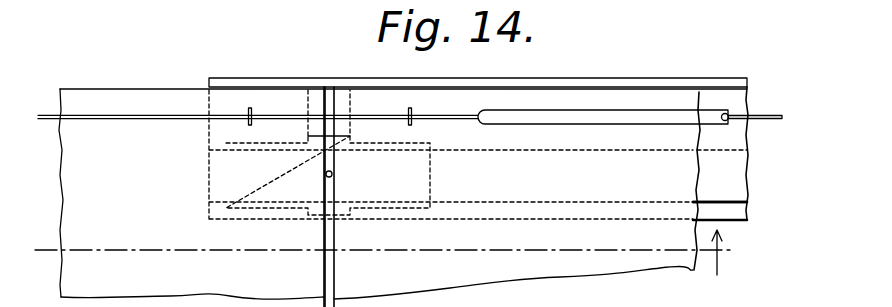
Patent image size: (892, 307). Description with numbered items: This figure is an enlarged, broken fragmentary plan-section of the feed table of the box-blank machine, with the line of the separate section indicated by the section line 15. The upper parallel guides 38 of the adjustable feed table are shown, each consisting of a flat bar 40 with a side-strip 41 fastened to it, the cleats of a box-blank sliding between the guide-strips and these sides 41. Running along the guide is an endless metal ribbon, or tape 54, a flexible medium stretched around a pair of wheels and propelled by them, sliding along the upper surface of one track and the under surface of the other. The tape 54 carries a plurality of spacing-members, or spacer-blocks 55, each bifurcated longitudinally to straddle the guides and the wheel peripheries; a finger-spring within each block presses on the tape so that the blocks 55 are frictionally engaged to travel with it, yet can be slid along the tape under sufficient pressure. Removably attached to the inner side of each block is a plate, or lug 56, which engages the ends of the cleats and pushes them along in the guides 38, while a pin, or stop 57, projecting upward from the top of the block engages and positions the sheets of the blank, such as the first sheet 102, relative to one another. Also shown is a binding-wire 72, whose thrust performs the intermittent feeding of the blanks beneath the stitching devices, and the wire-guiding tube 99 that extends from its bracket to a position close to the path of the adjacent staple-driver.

The section line 15 is at (741, 252).
The upper parallel guides 38 is at (744, 178).
The flat bar 40 is at (738, 212).
The side-strip 41 is at (308, 80).
The endless metal ribbon, or tape 54 is at (730, 182).
The spacing-members, or spacer-blocks 55 is at (430, 170).
The plate, or lug 56 is at (352, 127).
The pin, or stop 57 is at (332, 174).
The binding-wires 72 is at (148, 118).
The wire-guiding tube 99 is at (623, 117).
The first sheet 102 is at (391, 194).